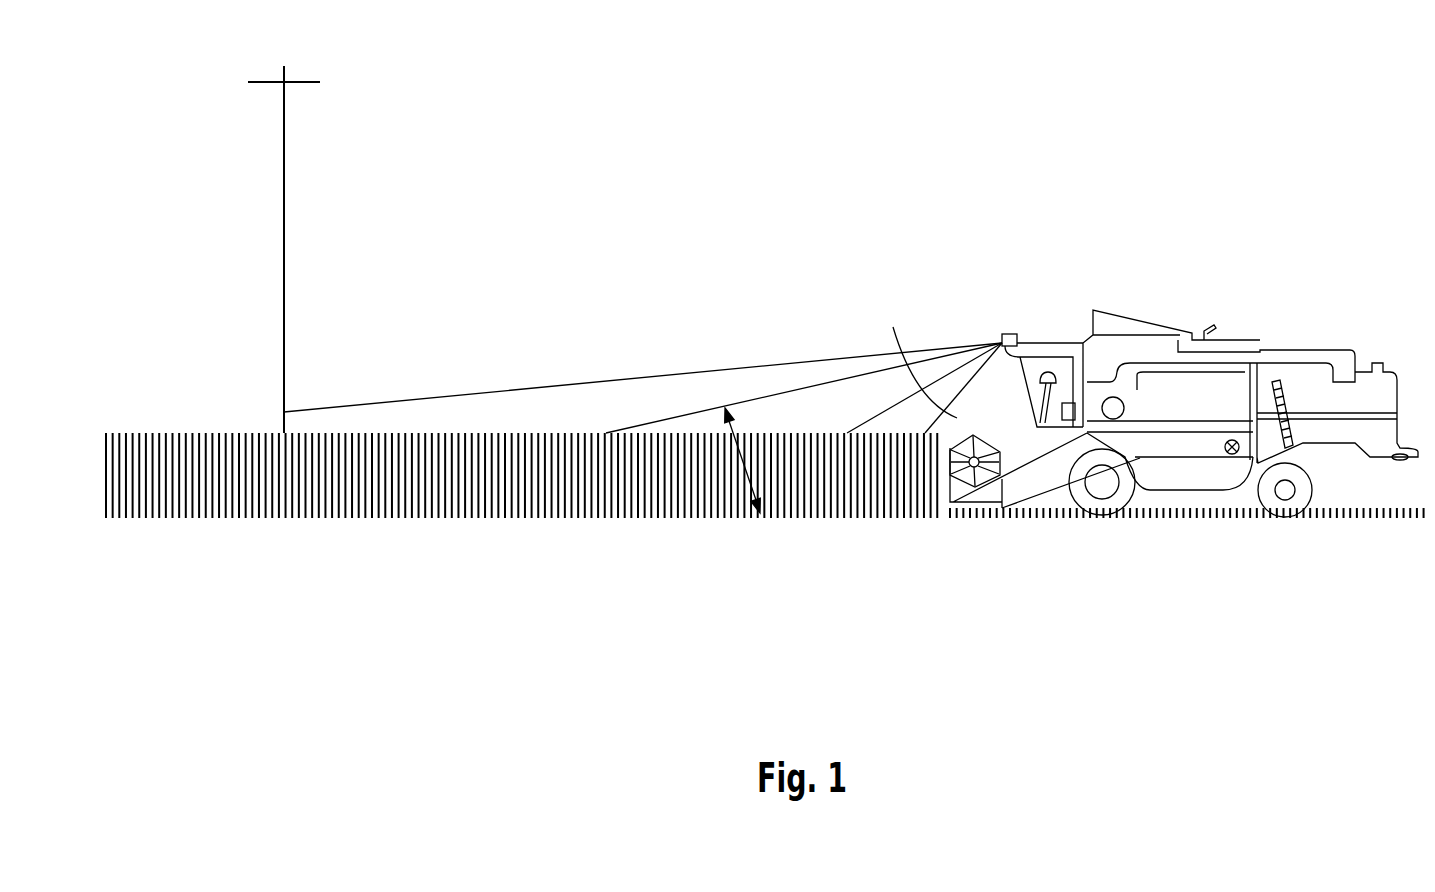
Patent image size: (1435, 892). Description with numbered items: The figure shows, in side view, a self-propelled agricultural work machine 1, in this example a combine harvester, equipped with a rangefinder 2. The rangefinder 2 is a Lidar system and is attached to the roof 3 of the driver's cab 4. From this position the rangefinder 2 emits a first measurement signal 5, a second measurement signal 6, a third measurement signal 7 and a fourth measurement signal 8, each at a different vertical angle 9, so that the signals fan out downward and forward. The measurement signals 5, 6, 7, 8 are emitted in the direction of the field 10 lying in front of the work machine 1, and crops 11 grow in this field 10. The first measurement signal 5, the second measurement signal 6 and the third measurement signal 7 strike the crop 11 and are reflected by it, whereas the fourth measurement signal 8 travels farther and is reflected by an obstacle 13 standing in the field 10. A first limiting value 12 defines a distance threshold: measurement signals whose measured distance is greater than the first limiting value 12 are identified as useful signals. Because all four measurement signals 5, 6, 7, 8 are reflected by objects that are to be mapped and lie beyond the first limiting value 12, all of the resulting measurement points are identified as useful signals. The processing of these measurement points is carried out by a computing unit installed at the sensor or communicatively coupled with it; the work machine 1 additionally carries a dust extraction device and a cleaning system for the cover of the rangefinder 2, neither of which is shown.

The self-propelled agricultural work machine 1 is at (1184, 355).
The rangefinder 2 is at (1002, 337).
The roof 3 is at (1023, 360).
The driver's cab 4 is at (1060, 360).
The first measurement signal 5 is at (977, 365).
The second measurement signal 6 is at (871, 420).
The third measurement signal 7 is at (648, 421).
The fourth measurement signal 8 is at (525, 389).
The vertical angle 9 is at (735, 426).
The field 10 is at (531, 518).
The crop 11 is at (208, 465).
The first limiting value 12 is at (922, 362).
The obstacle 13 is at (284, 165).